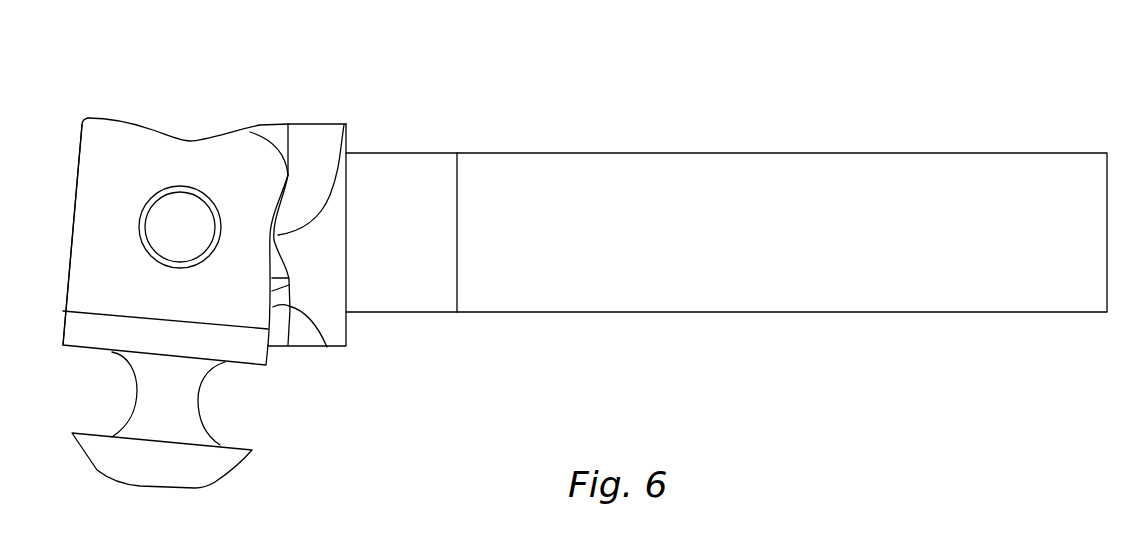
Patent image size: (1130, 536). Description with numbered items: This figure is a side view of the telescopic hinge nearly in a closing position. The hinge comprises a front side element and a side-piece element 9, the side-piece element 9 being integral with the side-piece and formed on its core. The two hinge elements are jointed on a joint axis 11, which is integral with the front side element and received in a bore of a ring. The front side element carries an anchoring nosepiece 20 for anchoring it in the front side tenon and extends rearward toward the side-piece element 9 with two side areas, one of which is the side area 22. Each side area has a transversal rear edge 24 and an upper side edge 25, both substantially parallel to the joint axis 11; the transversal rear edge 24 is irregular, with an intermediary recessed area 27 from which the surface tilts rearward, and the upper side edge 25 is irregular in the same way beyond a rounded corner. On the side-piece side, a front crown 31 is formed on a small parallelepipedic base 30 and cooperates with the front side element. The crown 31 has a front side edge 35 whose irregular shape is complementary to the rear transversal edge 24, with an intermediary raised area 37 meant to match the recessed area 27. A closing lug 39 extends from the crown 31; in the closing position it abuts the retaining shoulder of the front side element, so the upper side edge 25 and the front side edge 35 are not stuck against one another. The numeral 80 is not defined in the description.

The side-piece element 9 is at (562, 345).
The joint axis 11 is at (192, 222).
The anchoring nosepiece 20 is at (150, 420).
The side area 22 is at (123, 163).
The transversal rear edge 24 is at (100, 120).
The upper side edge 25 is at (290, 312).
The intermediary recessed area 27 is at (186, 141).
The parallelepipedic base 30 is at (428, 183).
The front crown 31 is at (313, 147).
The front side edge 35 is at (294, 133).
The intermediary raised area 37 is at (332, 188).
The closing lug 39 is at (280, 328).
The groove 80 is at (278, 137).